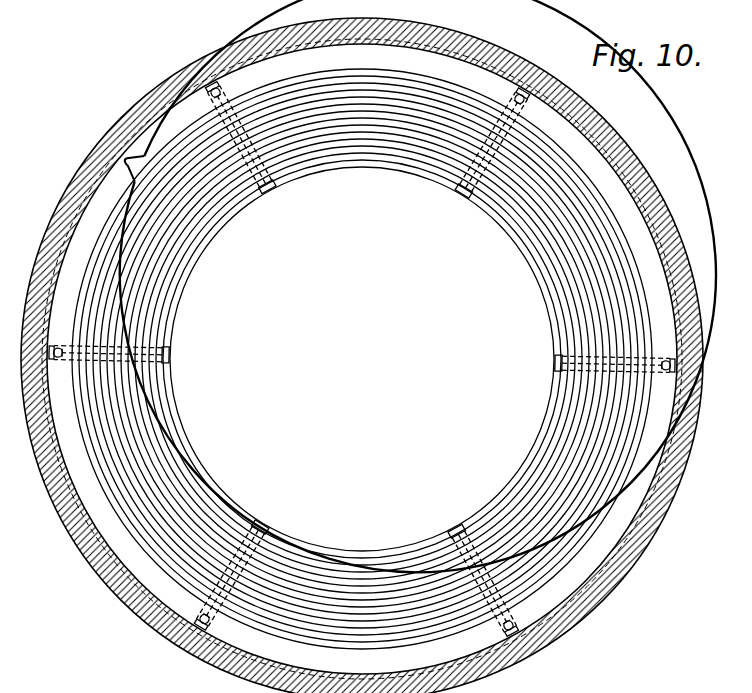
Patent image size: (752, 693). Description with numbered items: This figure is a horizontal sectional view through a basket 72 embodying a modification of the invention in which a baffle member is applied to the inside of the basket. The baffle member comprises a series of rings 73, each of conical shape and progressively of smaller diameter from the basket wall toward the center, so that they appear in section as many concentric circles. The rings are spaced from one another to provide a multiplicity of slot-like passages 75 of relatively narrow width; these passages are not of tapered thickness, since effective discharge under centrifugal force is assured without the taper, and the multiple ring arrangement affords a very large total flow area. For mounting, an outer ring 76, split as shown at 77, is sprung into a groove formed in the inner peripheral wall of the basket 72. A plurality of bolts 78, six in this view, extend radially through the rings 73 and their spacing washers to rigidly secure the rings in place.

The basket 72 is at (62, 505).
The rings 73 is at (200, 518).
The passages 75 is at (155, 427).
The outer ring 76 is at (88, 218).
The split 77 is at (133, 150).
The bolts 78 is at (260, 528).